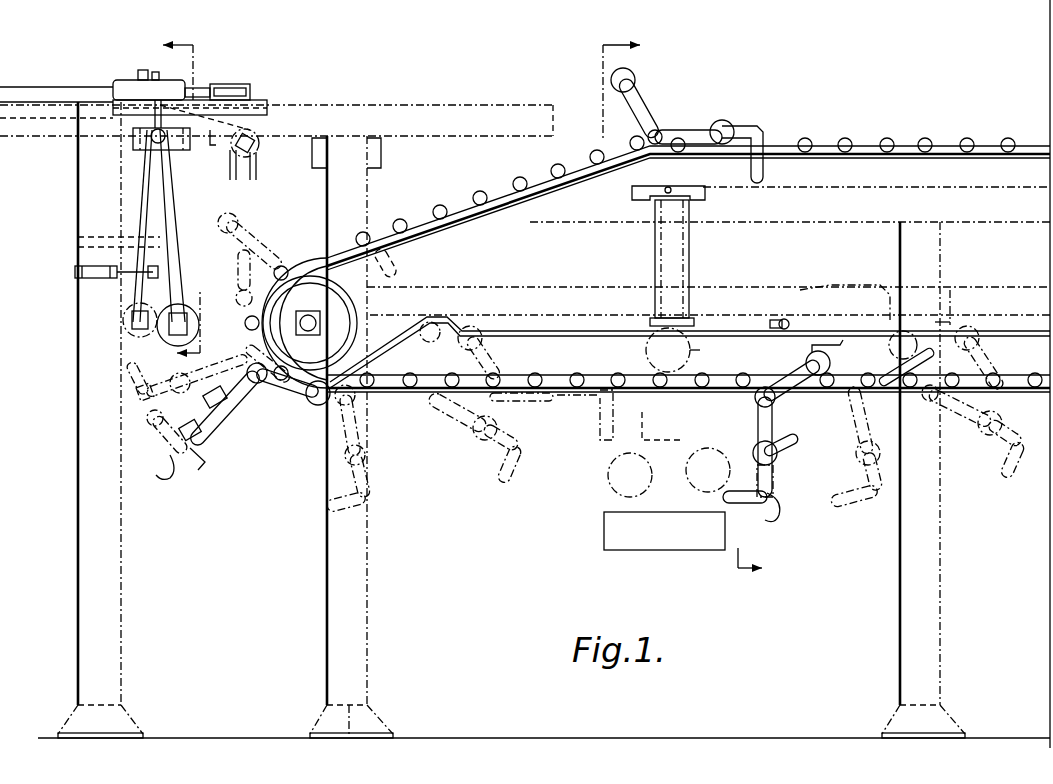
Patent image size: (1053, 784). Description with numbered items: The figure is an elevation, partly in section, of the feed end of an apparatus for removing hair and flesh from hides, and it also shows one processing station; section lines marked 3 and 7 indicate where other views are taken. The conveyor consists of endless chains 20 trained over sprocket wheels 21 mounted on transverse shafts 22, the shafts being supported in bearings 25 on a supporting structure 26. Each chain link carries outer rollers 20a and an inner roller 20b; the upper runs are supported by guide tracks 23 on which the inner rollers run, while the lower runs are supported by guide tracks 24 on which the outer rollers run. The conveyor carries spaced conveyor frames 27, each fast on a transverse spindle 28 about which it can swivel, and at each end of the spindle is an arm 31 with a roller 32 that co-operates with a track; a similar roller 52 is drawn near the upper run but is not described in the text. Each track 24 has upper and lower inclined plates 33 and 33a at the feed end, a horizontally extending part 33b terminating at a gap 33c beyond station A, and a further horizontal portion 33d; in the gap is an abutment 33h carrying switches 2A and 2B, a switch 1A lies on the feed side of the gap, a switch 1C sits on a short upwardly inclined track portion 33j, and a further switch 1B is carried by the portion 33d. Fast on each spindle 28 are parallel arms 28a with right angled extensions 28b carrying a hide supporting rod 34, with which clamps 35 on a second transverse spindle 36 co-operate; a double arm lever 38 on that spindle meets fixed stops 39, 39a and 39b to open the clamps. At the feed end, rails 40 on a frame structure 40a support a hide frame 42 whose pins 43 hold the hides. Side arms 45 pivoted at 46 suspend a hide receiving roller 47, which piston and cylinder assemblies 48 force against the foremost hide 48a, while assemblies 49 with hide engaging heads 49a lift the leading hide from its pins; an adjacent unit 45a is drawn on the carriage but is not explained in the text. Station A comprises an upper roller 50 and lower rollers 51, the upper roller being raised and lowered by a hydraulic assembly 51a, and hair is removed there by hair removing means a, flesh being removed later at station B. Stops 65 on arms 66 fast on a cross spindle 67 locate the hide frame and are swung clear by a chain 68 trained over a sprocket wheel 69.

The switch 1A is at (784, 318).
The switch 1B is at (967, 330).
The switch 1C is at (915, 405).
The switch 2A is at (824, 339).
The switch 2B is at (836, 335).
The section line 3 is at (189, 199).
The section line 7 is at (672, 311).
The endless chains 20 is at (647, 279).
The outer rollers 20a is at (560, 176).
The inner roller 20b is at (590, 172).
The sprocket wheels 21 is at (394, 250).
The transverse shafts 22 is at (298, 326).
The guide tracks 23 is at (545, 196).
The guide tracks 24 is at (508, 376).
The bearings 25 is at (306, 335).
The supporting structure 26 is at (337, 534).
The conveyor frames 27 is at (650, 104).
The transverse spindle 28 is at (756, 400).
The radially extending parallel arms 28a is at (780, 432).
The right angled extensions 28b is at (748, 508).
The arm 31 is at (660, 118).
The roller 32 is at (316, 404).
The upper inclined plate 33 is at (400, 346).
The lower inclined plate 33a is at (418, 320).
The horizontally extending part 33b is at (540, 316).
The gap 33c is at (805, 328).
The horizontally extending portion 33d is at (1008, 328).
The abutment 33h is at (806, 365).
The upwardly inclined track portion 33j is at (917, 328).
The hide supporting rod 34 is at (150, 418).
The clamps 35 is at (203, 462).
The second transverse spindle 36 is at (190, 424).
The double arm lever 38 is at (212, 396).
The fixed stop 39 is at (173, 393).
The fixed stop 39a is at (866, 382).
The fixed stop 39b is at (758, 462).
The rails 40 is at (415, 104).
The frame structure 40a is at (78, 420).
The hide frame 42 is at (90, 96).
The upwardly extending pins 43 is at (160, 90).
The side arms 45 is at (176, 238).
The motor 45a is at (235, 86).
The pivot 46 is at (142, 152).
The hide receiving roller 47 is at (172, 345).
The pneumatically operated piston and cylinder assemblies 48 is at (97, 278).
The hide 48a is at (130, 298).
The pneumatic piston and cylinder assemblies 49 is at (152, 200).
The hide engaging heads 49a is at (143, 72).
The upper roller 50 is at (686, 350).
The lower rollers 51 is at (645, 468).
The hydraulic piston and cylinder assembly 51a is at (660, 240).
The roller 52 is at (632, 78).
The stops 65 is at (198, 90).
The arms 66 is at (212, 132).
The cross spindle 67 is at (252, 176).
The chain 68 is at (228, 176).
The sprocket wheel 69 is at (252, 148).
The processing station A is at (610, 355).
The processing station B is at (1030, 350).
The hair removing means a is at (655, 545).